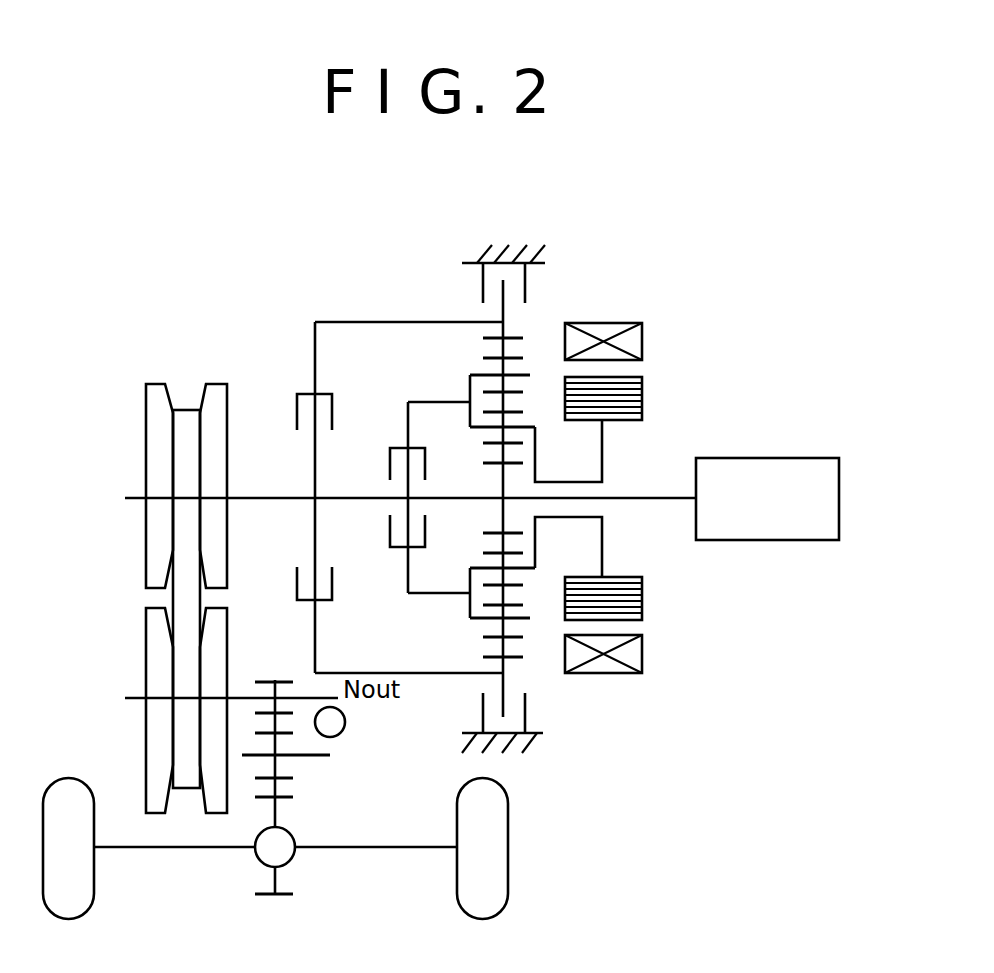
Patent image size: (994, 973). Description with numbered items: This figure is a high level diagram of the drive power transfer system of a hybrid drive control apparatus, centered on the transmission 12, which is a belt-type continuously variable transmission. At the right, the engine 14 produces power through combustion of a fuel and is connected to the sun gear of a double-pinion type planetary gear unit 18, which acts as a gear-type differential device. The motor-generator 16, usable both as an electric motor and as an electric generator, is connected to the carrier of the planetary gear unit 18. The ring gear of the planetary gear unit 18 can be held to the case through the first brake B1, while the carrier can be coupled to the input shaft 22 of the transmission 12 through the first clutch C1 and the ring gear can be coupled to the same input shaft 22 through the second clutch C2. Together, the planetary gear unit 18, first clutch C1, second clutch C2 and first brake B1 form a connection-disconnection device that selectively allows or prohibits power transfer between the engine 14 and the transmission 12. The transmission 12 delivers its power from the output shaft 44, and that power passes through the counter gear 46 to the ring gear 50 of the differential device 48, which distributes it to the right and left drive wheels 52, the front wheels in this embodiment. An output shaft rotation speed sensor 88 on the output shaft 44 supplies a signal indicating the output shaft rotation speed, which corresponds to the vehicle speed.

The transmission 12 is at (128, 389).
The engine 14 is at (775, 458).
The motor-generator 16 is at (641, 306).
The planetary gear unit 18 is at (450, 308).
The input shaft 22 is at (243, 498).
The output shaft 44 is at (237, 698).
The counter gear 46 is at (288, 775).
The differential device 48 is at (253, 858).
The ring gear 50 is at (283, 898).
The drive wheels 52 is at (68, 778).
The output shaft rotation speed sensor 88 is at (344, 727).
The first brake B1 is at (515, 499).
The first clutch C1 is at (430, 497).
The second clutch C2 is at (400, 497).